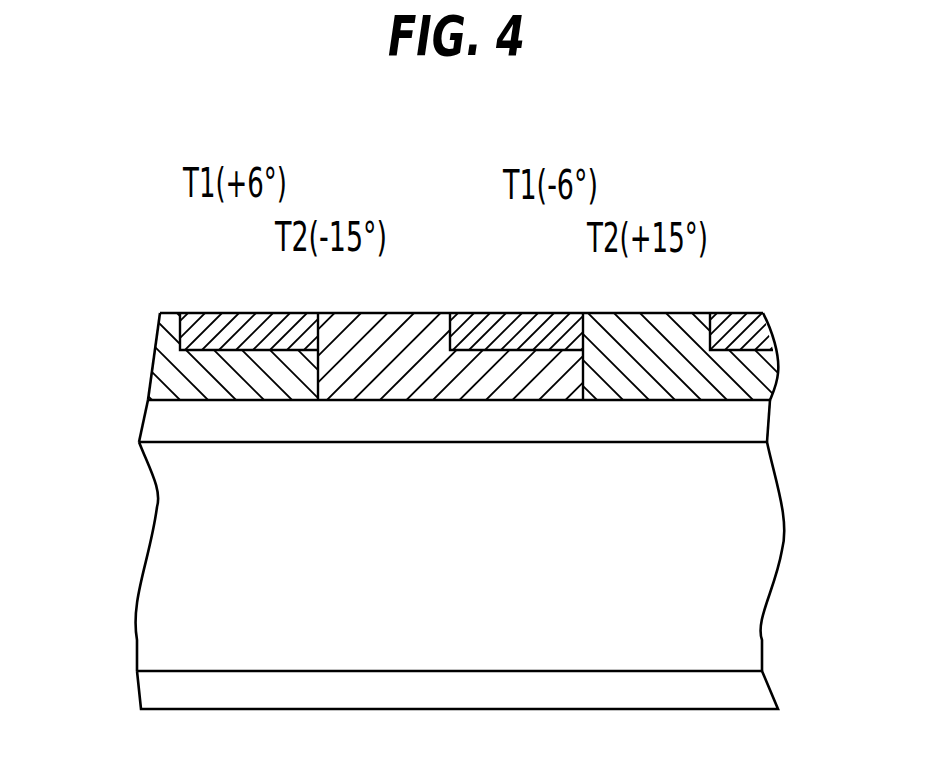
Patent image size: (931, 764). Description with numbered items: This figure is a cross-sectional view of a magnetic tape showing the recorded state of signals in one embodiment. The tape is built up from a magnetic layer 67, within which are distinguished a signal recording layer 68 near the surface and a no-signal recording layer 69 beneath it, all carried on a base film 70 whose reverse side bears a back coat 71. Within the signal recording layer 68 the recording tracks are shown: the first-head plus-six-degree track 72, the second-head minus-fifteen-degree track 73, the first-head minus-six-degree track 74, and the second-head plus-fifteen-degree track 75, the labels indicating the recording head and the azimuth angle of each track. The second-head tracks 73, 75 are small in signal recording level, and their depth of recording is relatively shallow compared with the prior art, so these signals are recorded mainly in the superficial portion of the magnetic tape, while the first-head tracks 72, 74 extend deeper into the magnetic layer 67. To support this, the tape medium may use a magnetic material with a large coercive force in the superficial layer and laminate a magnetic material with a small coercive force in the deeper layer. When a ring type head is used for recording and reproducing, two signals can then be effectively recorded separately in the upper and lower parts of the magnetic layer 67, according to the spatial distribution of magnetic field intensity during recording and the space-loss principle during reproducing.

The magnetic layer 67 is at (452, 350).
The signal recording layer 68 is at (456, 329).
The no-signal recording layer 69 is at (770, 400).
The base film 70 is at (97, 442).
The back coat 71 is at (137, 671).
The T1(+6) track 72 is at (172, 313).
The T2(−15) track 73 is at (247, 313).
The T1(−6) track 74 is at (418, 313).
The T2(+15) track 75 is at (517, 313).